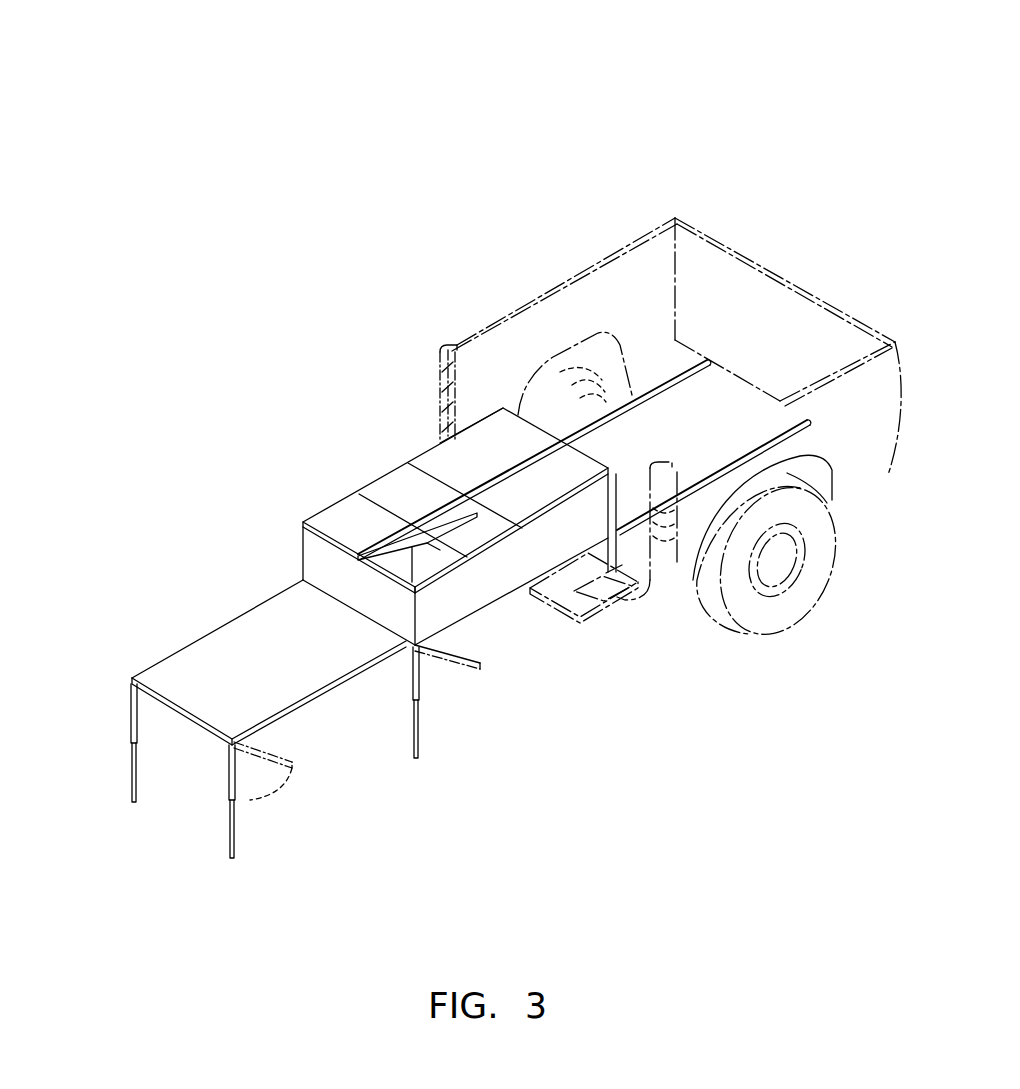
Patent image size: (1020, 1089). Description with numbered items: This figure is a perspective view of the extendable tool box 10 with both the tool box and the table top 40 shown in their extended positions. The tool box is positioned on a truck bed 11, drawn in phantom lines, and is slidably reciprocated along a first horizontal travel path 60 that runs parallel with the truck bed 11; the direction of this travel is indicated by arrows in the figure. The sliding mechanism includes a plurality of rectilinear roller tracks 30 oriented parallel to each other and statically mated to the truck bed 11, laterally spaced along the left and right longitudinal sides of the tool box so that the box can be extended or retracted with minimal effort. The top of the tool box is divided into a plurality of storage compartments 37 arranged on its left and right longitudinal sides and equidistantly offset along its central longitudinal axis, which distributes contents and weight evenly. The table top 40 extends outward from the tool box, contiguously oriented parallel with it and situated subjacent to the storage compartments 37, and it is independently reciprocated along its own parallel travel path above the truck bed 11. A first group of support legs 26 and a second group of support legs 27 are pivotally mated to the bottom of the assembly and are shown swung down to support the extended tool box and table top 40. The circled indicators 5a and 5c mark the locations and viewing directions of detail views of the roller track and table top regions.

The extendable tool box 10 is at (364, 86).
The truck bed 11 is at (645, 363).
The first group of support legs 26 is at (408, 692).
The second group of support legs 27 is at (222, 790).
The rectilinear roller tracks 30 is at (690, 377).
The storage compartments 37 is at (497, 440).
The table top 40 is at (245, 640).
The first horizontal travel path 60 is at (653, 410).
The view indicator 5a is at (613, 467).
The view indicator 5c is at (423, 620).